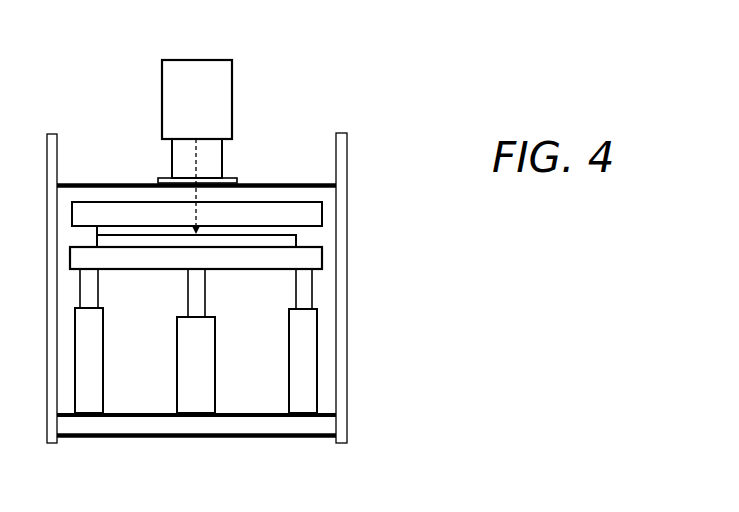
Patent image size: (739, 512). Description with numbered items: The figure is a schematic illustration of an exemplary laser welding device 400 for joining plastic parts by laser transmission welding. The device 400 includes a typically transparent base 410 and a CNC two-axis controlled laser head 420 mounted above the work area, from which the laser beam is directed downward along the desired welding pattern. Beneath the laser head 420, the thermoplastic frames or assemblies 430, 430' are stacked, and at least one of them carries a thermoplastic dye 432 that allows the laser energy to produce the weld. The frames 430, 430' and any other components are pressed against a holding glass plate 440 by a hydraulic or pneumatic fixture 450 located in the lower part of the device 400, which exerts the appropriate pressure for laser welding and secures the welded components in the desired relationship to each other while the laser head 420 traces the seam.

The laser welding device 400 is at (387, 93).
The transparent base 410 is at (108, 186).
The CNC two-axis controlled laser head 420 is at (165, 73).
The thermoplastic frame 430 is at (197, 138).
The thermoplastic frame 430' is at (221, 171).
The thermoplastic dye 432 is at (296, 234).
The holding glass plate 440 is at (313, 215).
The hydraulic or pneumatic fixture 450 is at (208, 383).